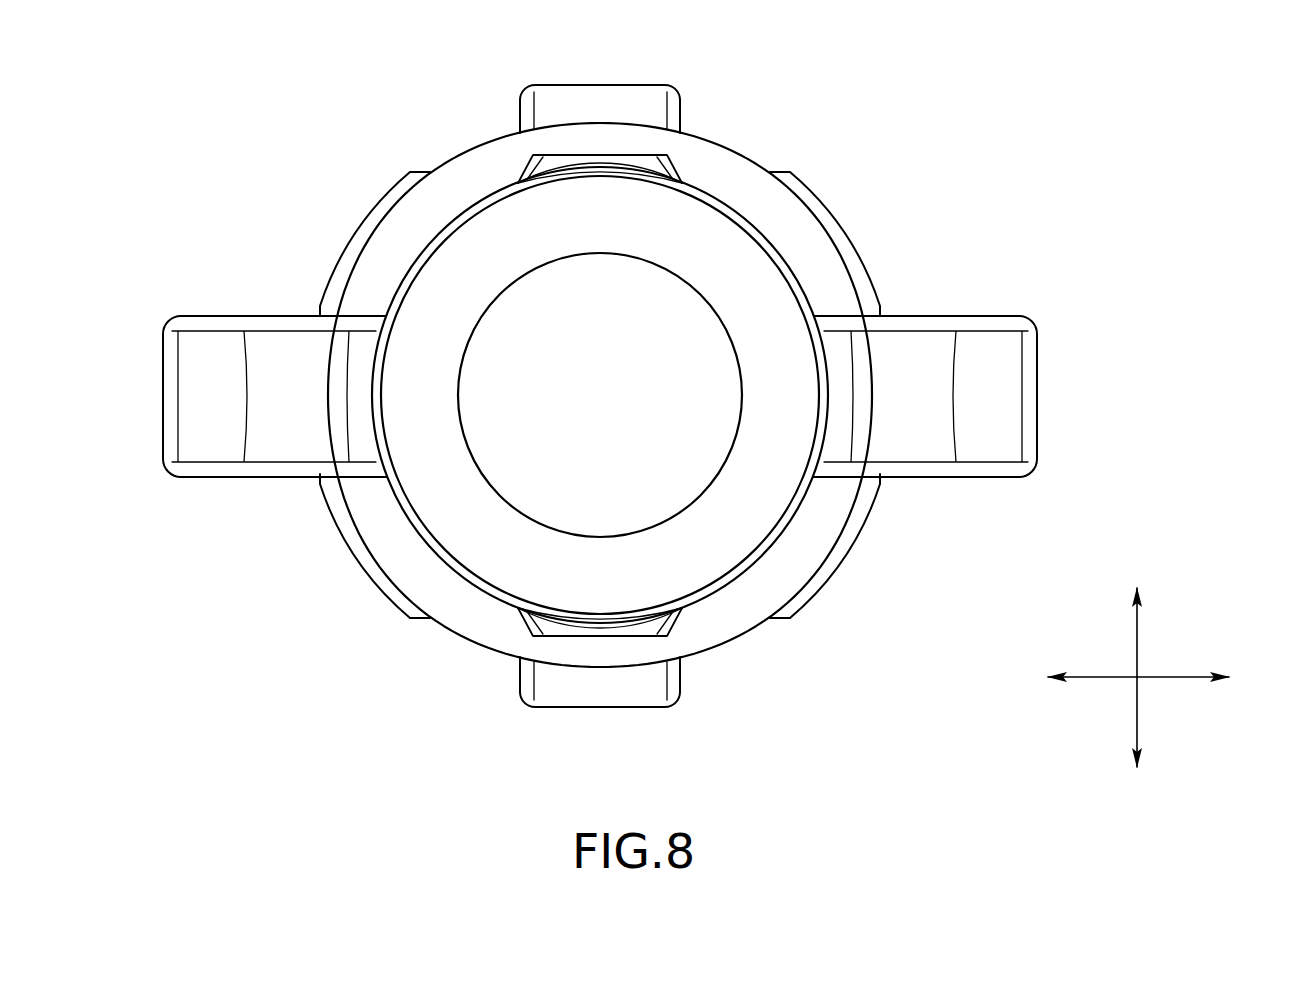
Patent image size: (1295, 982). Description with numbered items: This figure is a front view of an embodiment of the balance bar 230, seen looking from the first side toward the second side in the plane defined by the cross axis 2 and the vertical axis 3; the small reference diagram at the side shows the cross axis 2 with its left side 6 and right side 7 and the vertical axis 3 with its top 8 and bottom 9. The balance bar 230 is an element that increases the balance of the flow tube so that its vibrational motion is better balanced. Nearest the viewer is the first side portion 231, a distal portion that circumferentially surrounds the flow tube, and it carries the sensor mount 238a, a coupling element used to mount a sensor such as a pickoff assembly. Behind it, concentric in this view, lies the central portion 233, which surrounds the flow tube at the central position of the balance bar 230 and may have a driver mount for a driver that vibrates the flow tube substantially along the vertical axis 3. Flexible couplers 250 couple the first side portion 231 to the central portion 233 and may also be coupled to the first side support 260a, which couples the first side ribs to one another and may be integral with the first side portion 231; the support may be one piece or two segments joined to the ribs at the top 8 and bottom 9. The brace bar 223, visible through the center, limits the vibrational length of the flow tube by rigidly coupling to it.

The balance bar 230 is at (978, 167).
The first side portion 231 is at (503, 181).
The central portion 233 is at (815, 183).
The sensor mount 238a is at (668, 150).
The brace bar 223 is at (670, 567).
The flexible couplers 250 is at (612, 115).
The first side support 260a is at (442, 165).
The cross axis 2 is at (1098, 680).
The vertical axis 3 is at (1138, 647).
The left side 6 is at (1056, 672).
The right side 7 is at (1227, 673).
The top 8 is at (1134, 600).
The bottom 9 is at (1140, 752).